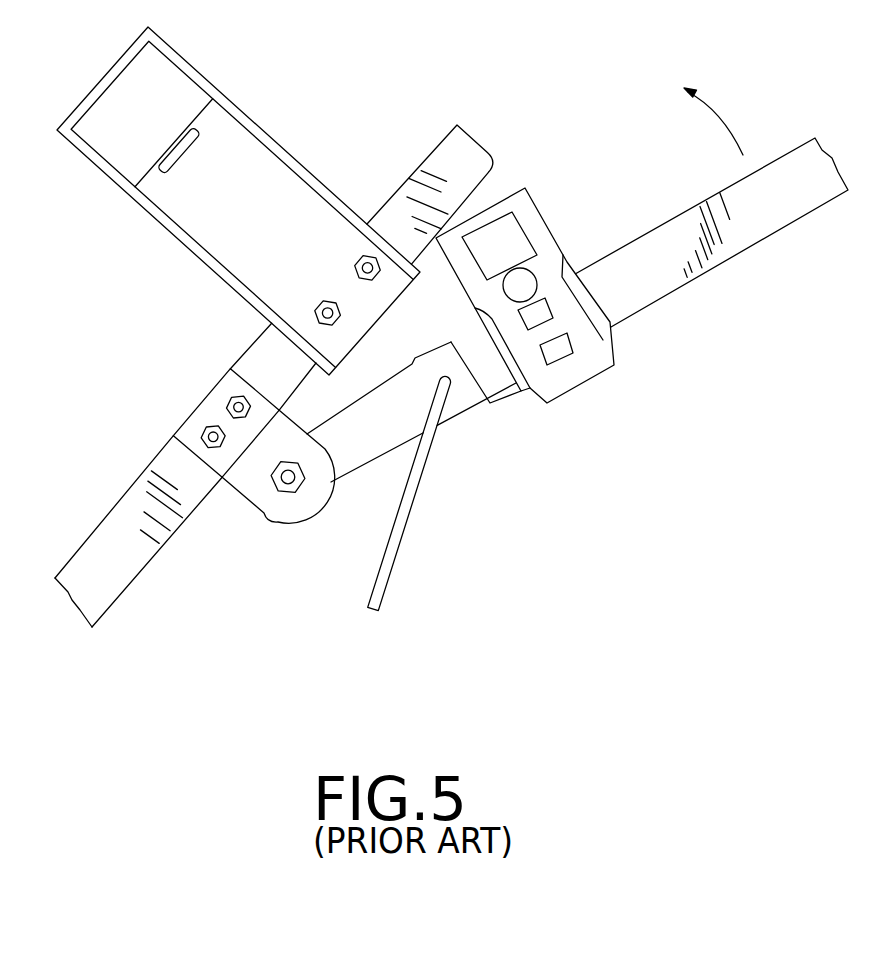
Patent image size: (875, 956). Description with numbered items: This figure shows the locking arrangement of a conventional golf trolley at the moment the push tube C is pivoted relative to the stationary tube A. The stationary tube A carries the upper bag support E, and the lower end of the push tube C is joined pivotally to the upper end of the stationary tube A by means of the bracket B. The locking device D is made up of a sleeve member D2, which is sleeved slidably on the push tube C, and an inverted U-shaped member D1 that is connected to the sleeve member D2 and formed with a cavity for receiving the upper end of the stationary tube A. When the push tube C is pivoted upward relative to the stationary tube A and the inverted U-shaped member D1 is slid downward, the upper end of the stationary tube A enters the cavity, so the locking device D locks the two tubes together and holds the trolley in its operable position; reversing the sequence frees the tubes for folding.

The stationary tube A is at (410, 177).
The bracket B is at (195, 410).
The push tube C is at (760, 240).
The locking device D is at (561, 311).
The inverted U-shaped member D1 is at (540, 200).
The sleeve member D2 is at (612, 345).
The upper bag support E is at (298, 161).